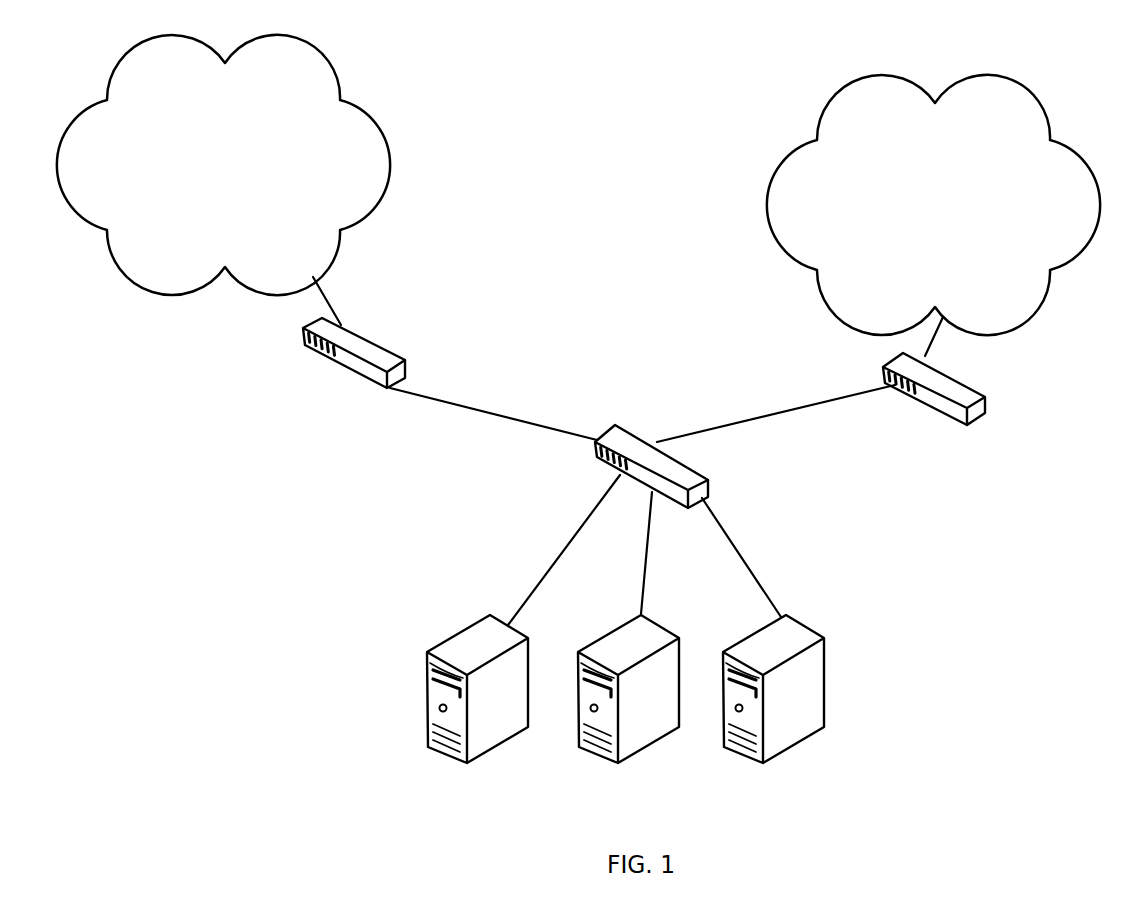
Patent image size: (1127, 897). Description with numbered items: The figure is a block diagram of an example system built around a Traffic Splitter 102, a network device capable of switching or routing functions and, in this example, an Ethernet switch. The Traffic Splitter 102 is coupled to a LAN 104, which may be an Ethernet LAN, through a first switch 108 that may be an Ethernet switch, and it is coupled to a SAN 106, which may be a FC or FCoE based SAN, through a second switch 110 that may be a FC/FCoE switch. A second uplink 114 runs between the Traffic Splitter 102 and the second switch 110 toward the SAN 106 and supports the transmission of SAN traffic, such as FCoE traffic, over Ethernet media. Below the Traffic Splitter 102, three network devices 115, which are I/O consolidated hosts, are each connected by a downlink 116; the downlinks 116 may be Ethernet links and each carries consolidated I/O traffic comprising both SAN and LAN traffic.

The Traffic Splitter 102 is at (710, 478).
The LAN 104 is at (223, 165).
The SAN 106 is at (933, 205).
The first switch 108 is at (397, 356).
The second switch 110 is at (977, 392).
The second uplink 114 is at (787, 415).
The network devices 115 is at (743, 792).
The downlinks 116 is at (753, 588).